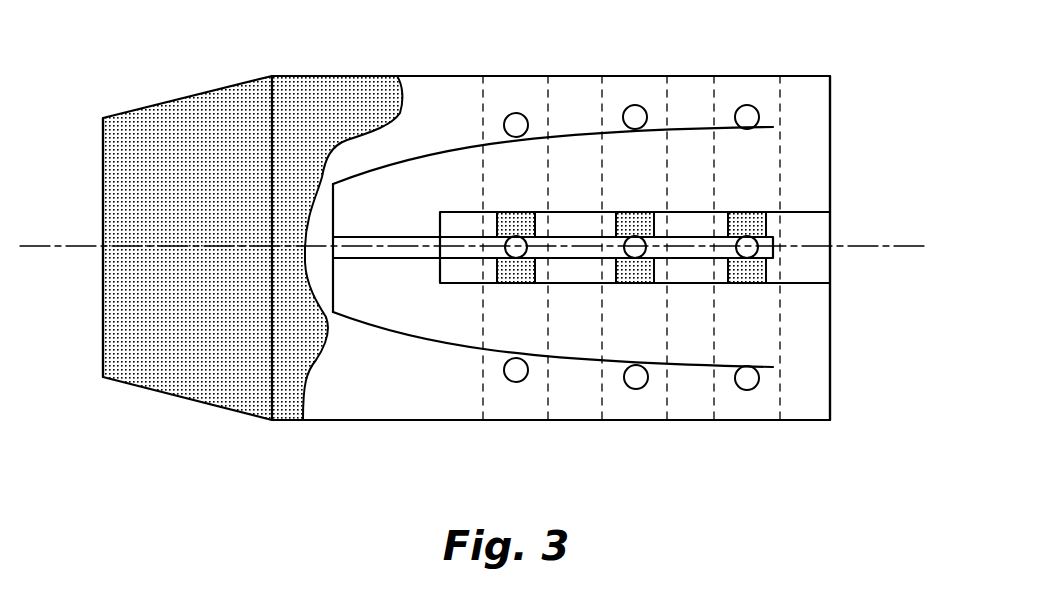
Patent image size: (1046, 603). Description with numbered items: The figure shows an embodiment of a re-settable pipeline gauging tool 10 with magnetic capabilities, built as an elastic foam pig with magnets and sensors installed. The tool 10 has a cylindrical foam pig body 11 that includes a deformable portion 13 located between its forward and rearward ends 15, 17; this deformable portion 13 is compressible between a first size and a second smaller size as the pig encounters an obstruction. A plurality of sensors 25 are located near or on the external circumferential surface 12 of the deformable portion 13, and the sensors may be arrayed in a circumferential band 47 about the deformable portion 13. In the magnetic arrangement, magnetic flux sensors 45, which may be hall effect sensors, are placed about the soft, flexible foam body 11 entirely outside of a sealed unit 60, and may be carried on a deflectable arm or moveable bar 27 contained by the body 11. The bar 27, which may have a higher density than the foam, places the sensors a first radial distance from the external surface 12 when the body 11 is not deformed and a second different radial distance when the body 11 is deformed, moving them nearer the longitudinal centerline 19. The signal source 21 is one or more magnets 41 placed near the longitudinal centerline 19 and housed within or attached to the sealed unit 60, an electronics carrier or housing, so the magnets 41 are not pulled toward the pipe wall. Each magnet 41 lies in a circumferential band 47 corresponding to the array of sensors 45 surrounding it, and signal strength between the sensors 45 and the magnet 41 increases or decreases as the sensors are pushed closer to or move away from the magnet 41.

The pipeline gauging tool 10 is at (155, 97).
The cylindrical foam pig body 11 is at (334, 76).
The external circumferential surface 12 is at (378, 420).
The deformable portion 13 is at (428, 103).
The forward end 15 is at (103, 362).
The rearward end 17 is at (832, 394).
The longitudinal centerline 19 is at (62, 247).
The signal source 21 is at (520, 292).
The sensors 25 is at (640, 100).
The deflectable arm or moveable bar 27 is at (375, 330).
The magnets 41 is at (633, 285).
The magnetic flux sensors 45 is at (747, 104).
The circumferential band 47 is at (782, 180).
The sealed unit 60 is at (455, 285).